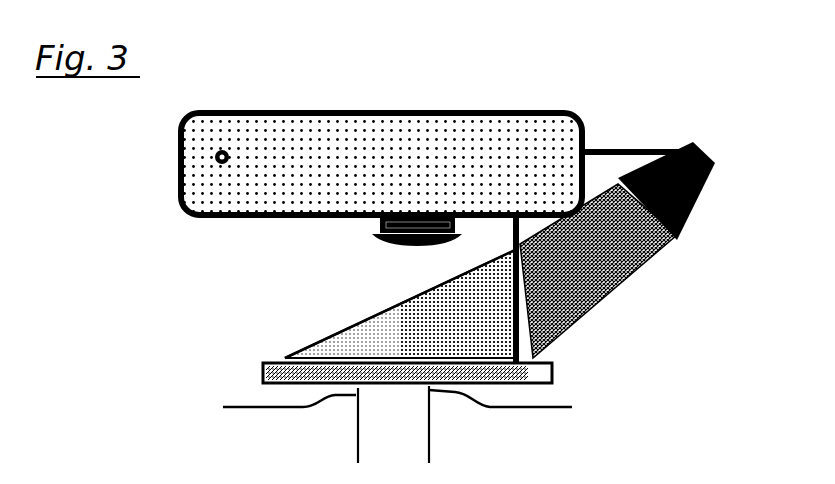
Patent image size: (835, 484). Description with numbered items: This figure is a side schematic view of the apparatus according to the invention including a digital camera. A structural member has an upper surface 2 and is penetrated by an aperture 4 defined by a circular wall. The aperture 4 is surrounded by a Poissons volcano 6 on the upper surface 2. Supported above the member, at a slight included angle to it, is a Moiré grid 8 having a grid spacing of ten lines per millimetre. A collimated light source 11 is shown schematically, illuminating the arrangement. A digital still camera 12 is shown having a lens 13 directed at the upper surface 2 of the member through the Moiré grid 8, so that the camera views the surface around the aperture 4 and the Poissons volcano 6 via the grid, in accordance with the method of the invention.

The upper surface 2 is at (237, 400).
The aperture 4 is at (415, 408).
The Poissons volcano 6 is at (480, 395).
The Moiré grid 8 is at (267, 365).
The collimated light source 11 is at (690, 222).
The digital still camera 12 is at (522, 108).
The lens 13 is at (398, 246).